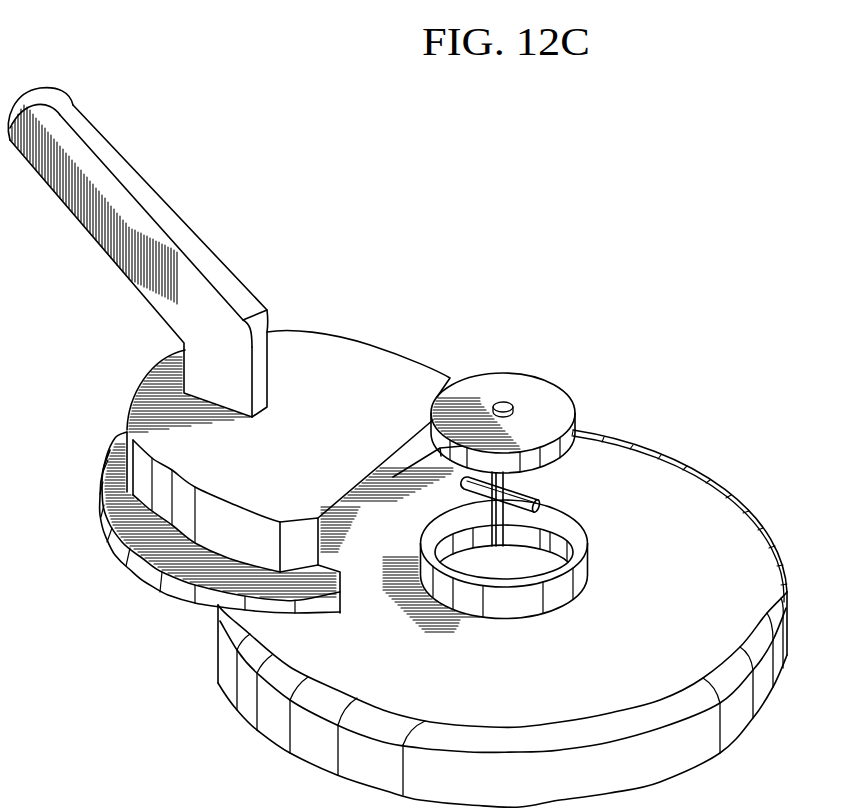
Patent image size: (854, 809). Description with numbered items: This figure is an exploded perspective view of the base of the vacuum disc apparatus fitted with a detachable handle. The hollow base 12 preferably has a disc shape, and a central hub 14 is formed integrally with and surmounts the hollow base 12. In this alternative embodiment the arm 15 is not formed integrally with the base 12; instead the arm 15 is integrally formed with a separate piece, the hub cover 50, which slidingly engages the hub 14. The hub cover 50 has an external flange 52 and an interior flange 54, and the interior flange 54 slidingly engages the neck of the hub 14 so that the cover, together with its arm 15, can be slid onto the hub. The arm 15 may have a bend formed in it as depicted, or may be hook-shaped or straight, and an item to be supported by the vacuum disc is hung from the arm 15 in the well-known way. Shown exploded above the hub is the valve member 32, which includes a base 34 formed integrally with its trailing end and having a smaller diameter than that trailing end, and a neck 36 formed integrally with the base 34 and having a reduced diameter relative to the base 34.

The hollow base 12 is at (733, 713).
The central hub 14 is at (549, 598).
The arm 15 is at (110, 158).
The valve member 32 is at (555, 398).
The base 34 is at (541, 495).
The neck 36 is at (548, 481).
The hub cover 50 is at (127, 432).
The external flange 52 is at (107, 525).
The interior flange 54 is at (397, 462).